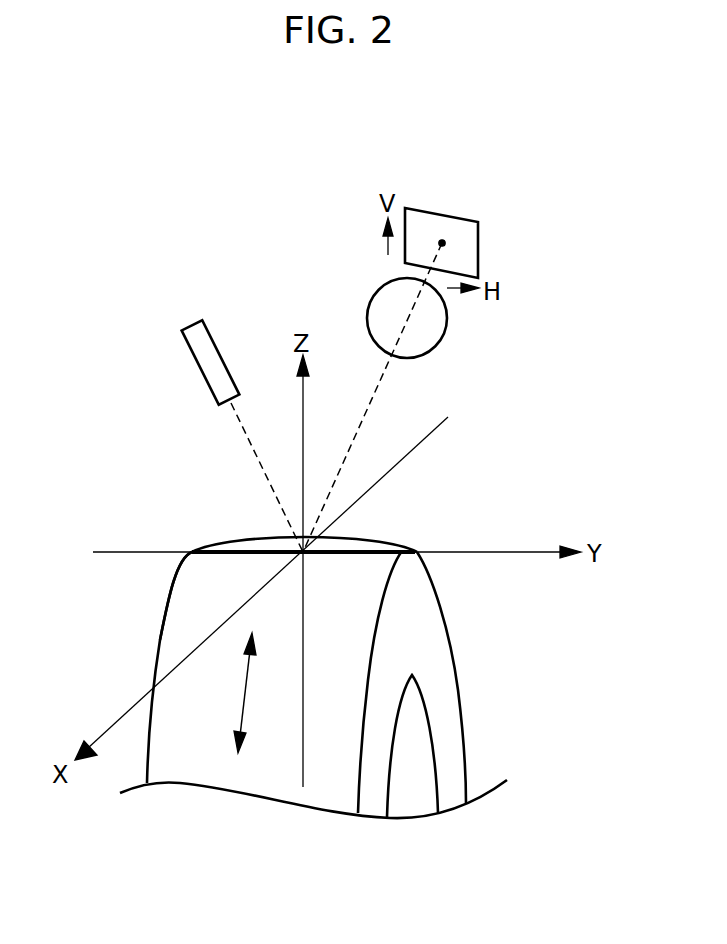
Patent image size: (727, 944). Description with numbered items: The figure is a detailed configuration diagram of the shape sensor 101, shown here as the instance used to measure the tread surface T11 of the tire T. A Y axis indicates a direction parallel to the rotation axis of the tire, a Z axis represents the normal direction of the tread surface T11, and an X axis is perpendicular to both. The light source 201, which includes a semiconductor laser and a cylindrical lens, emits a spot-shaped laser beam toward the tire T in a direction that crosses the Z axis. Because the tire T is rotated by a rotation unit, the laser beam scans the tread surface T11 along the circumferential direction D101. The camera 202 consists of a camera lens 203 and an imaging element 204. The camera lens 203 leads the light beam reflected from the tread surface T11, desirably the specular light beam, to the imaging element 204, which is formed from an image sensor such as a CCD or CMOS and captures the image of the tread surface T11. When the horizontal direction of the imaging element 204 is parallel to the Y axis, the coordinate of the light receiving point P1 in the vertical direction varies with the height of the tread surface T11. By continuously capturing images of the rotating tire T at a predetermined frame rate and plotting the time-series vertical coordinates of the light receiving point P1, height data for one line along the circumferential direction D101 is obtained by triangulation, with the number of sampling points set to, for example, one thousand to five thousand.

The shape sensor 101 is at (252, 152).
The light source 201 is at (193, 320).
The camera 202 is at (364, 253).
The camera lens 203 is at (427, 318).
The imaging element 204 is at (422, 209).
The light receiving point P1 is at (442, 243).
The tire T is at (447, 682).
The tread surface T11 is at (185, 596).
The circumferential direction D101 is at (212, 693).